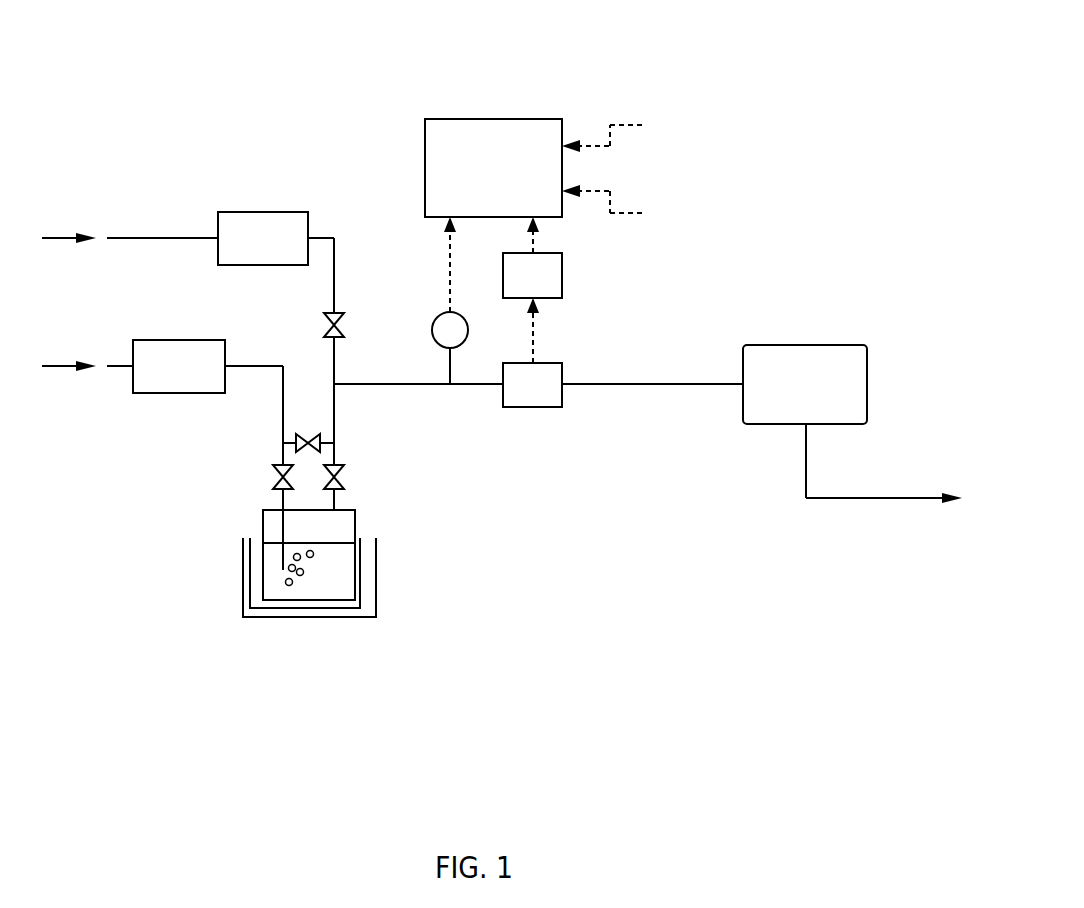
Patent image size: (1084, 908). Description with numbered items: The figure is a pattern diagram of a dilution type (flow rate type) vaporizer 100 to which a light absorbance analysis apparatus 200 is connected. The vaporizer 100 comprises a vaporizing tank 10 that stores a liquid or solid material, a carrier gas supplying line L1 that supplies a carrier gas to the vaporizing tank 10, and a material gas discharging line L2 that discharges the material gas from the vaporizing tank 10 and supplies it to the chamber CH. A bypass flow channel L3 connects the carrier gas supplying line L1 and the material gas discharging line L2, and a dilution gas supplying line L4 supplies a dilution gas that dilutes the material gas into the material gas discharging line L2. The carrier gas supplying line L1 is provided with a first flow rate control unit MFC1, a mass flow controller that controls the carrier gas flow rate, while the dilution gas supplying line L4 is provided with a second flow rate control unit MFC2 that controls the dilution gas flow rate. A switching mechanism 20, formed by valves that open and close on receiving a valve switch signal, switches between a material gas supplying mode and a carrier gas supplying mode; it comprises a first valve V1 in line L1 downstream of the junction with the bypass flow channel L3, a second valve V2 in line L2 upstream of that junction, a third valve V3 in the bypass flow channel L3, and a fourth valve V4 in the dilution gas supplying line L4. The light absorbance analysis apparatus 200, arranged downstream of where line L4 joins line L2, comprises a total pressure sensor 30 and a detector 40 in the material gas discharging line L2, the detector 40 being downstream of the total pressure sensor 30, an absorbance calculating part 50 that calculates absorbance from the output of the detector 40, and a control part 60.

The vaporizer 100 is at (112, 90).
The vaporizing tank 10 is at (357, 528).
The switching mechanism 20 is at (307, 392).
The total pressure sensor 30 is at (469, 331).
The detector 40 is at (548, 362).
The absorbance calculating part 50 is at (563, 278).
The control part 60 is at (540, 118).
The light absorbance analysis apparatus 200 is at (472, 406).
The first flow rate control unit MFC1 is at (150, 395).
The second flow rate control unit MFC2 is at (232, 266).
The carrier gas supplying line L1 is at (286, 364).
The material gas discharging line L2 is at (630, 383).
The bypass flow channel L3 is at (292, 440).
The dilution gas supplying line L4 is at (336, 259).
The first valve V1 is at (273, 475).
The second valve V2 is at (346, 476).
The third valve V3 is at (322, 440).
The fourth valve V4 is at (346, 326).
The chamber CH is at (818, 343).